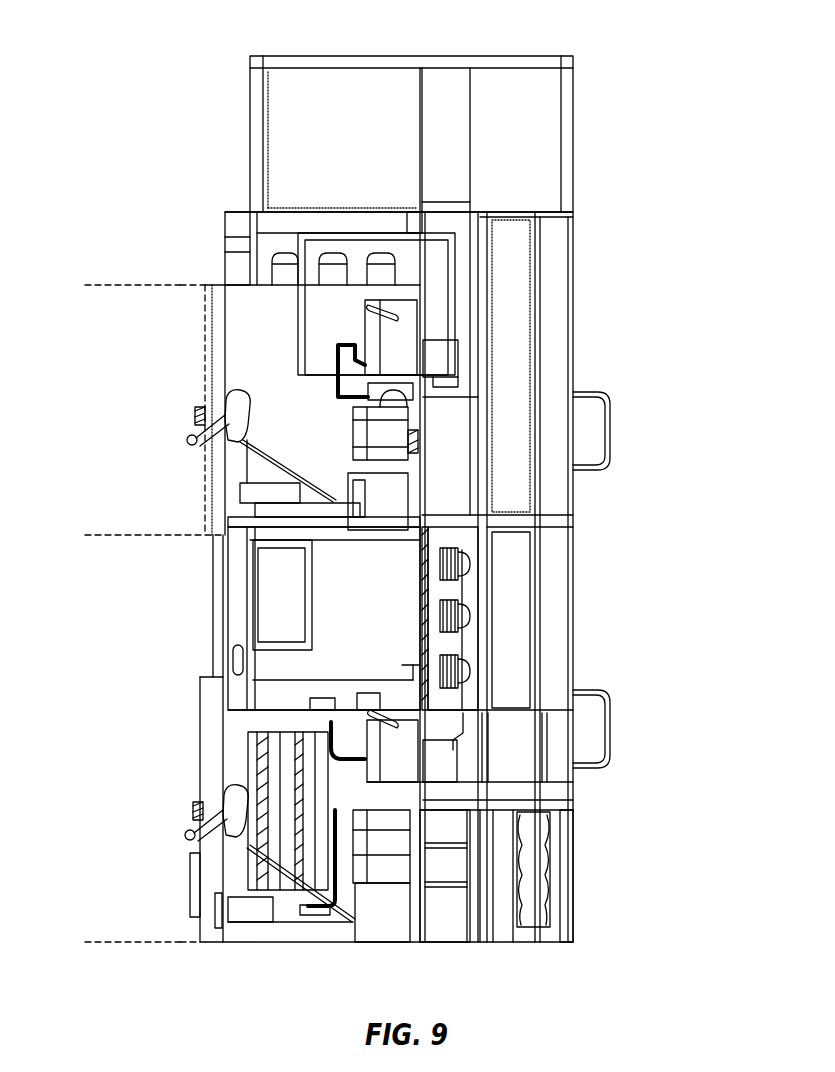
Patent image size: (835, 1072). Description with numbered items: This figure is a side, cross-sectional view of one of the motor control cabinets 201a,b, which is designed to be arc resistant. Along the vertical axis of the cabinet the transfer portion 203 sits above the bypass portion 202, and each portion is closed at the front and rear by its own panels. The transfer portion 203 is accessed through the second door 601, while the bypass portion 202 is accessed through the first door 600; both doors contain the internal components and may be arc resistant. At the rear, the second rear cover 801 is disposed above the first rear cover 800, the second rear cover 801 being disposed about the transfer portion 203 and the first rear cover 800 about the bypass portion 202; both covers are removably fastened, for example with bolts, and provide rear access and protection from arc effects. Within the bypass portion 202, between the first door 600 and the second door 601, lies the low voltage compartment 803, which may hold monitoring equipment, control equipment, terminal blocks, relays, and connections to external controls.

The motor control cabinet 201a,b is at (652, 45).
The second rear cover 801 is at (575, 335).
The first rear cover 800 is at (575, 657).
The transfer portion 203 is at (85, 285).
The bypass portion 202 is at (85, 535).
The second door 601 is at (205, 368).
The first door 600 is at (200, 757).
The low voltage compartment 803 is at (210, 607).